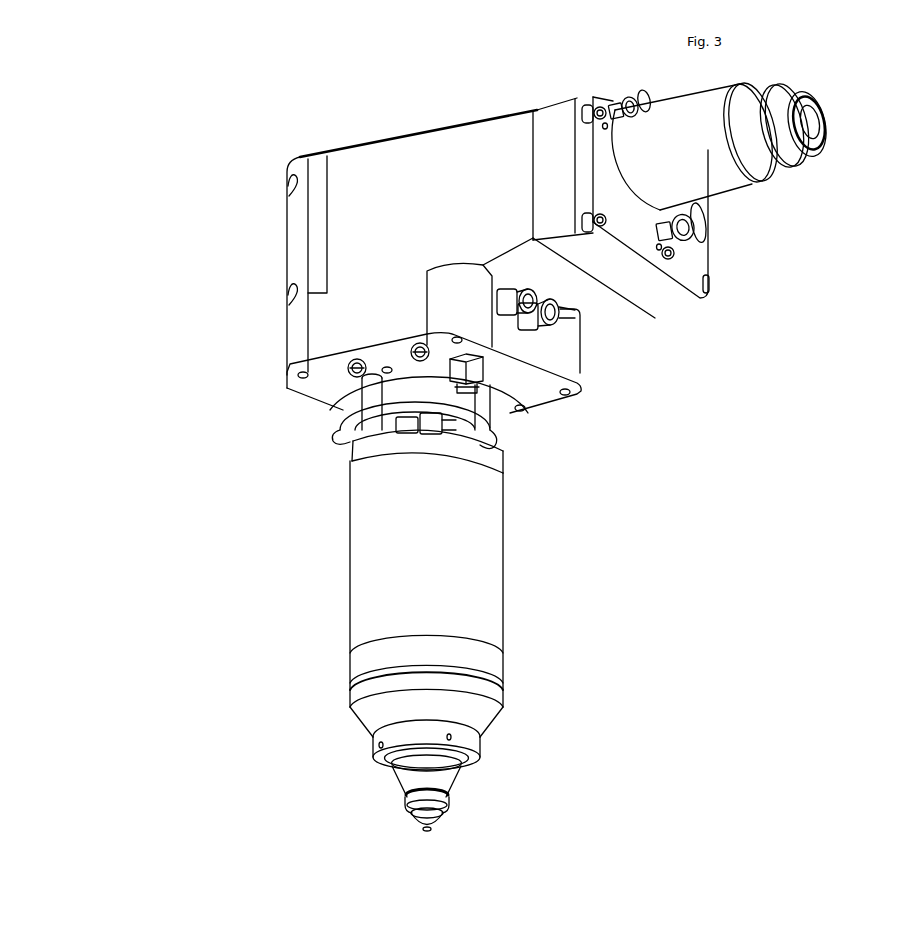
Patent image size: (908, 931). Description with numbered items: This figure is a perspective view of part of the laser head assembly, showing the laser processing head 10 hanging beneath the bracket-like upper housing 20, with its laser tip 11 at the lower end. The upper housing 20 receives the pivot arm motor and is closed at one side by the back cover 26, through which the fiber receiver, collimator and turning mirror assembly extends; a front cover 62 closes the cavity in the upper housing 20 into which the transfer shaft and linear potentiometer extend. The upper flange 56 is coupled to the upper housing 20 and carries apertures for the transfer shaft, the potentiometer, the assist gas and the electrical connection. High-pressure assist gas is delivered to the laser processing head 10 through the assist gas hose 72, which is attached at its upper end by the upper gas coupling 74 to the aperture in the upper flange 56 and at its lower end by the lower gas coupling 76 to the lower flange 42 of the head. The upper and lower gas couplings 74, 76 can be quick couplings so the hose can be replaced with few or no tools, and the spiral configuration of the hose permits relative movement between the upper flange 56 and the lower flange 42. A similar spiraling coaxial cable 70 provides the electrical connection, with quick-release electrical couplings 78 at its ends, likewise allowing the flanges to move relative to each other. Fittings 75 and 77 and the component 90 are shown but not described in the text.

The laser processing head 10 is at (507, 555).
The laser tip 11 is at (440, 836).
The upper housing 20 is at (428, 130).
The back cover 26 is at (562, 117).
The lower flange 42 is at (352, 465).
The upper flange 56 is at (520, 389).
The front cover 62 is at (297, 225).
The coaxial cable 70 is at (352, 402).
The assist gas hose 72 is at (350, 447).
The upper gas coupling 74 is at (513, 372).
The gas fitting 75 is at (548, 316).
The lower gas coupling 76 is at (476, 438).
The gas fitting 77 is at (570, 312).
The electrical couplings 78 is at (488, 394).
The actuator cylinder 90 is at (703, 243).